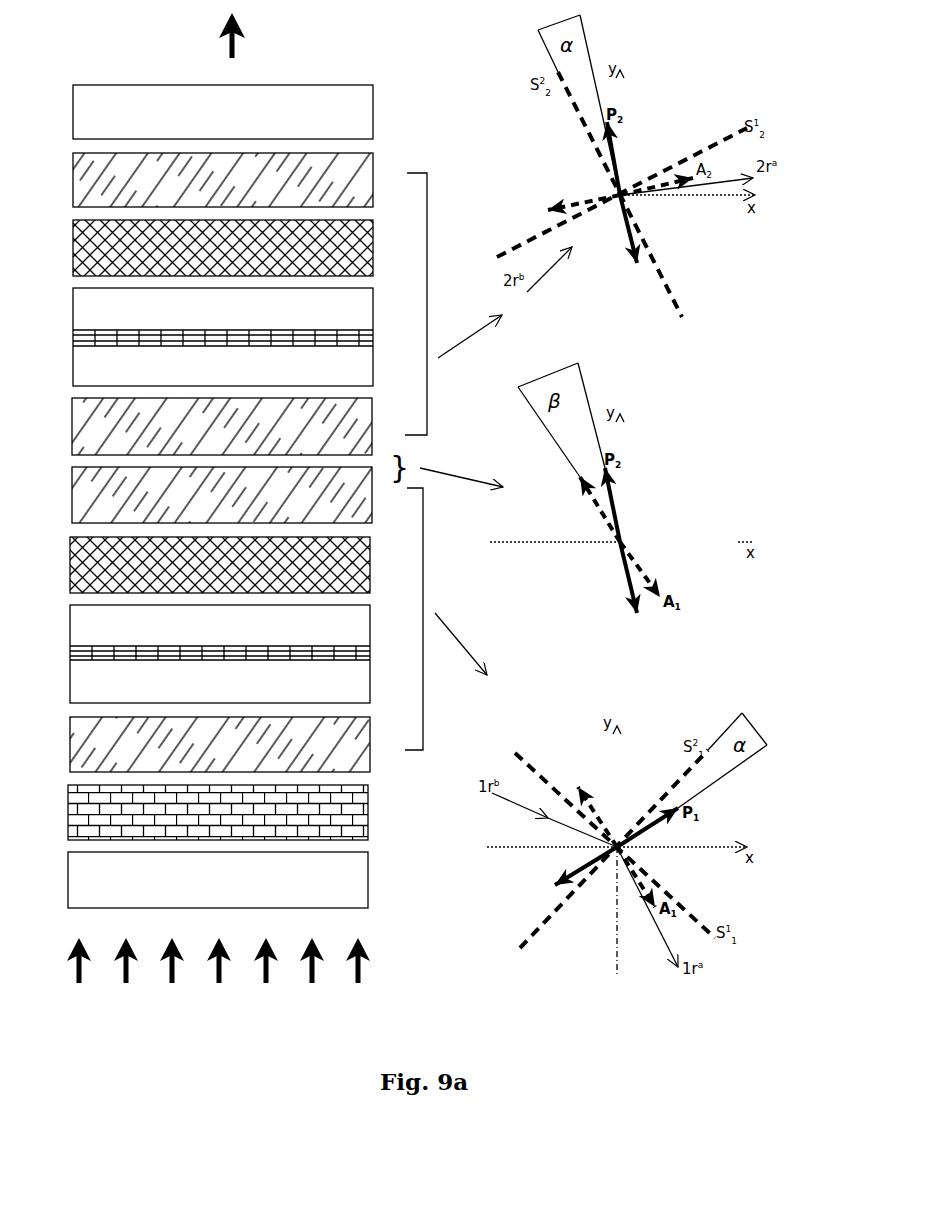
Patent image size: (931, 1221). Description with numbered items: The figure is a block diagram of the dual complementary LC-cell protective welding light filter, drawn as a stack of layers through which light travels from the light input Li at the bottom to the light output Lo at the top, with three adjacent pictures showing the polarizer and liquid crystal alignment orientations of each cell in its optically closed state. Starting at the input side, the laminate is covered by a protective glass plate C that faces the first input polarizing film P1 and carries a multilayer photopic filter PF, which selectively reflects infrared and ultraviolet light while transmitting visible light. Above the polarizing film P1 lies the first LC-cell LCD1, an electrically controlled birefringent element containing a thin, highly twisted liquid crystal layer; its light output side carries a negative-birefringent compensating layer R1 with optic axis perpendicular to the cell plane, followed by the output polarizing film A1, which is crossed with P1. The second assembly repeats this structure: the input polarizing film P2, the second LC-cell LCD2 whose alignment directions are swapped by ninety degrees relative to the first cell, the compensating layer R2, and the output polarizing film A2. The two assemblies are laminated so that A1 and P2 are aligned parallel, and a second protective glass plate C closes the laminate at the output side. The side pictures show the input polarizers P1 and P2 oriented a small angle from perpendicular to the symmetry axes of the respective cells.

The protective glass plate C is at (234, 496).
The light output polarizing film A2 is at (240, 180).
The negative-birefringent compensating layer R2 is at (240, 248).
The second LC-cell LCD2 is at (248, 337).
The light input polarizing film P2 is at (239, 426).
The light output polarizing film A1 is at (239, 495).
The negative-birefringent compensating layer R1 is at (238, 565).
The first LC-cell LCD1 is at (246, 654).
The light input polarizing film P1 is at (237, 744).
The multilayer photopic filter PF is at (237, 812).
The light output Lo is at (248, 35).
The light input Li is at (229, 960).